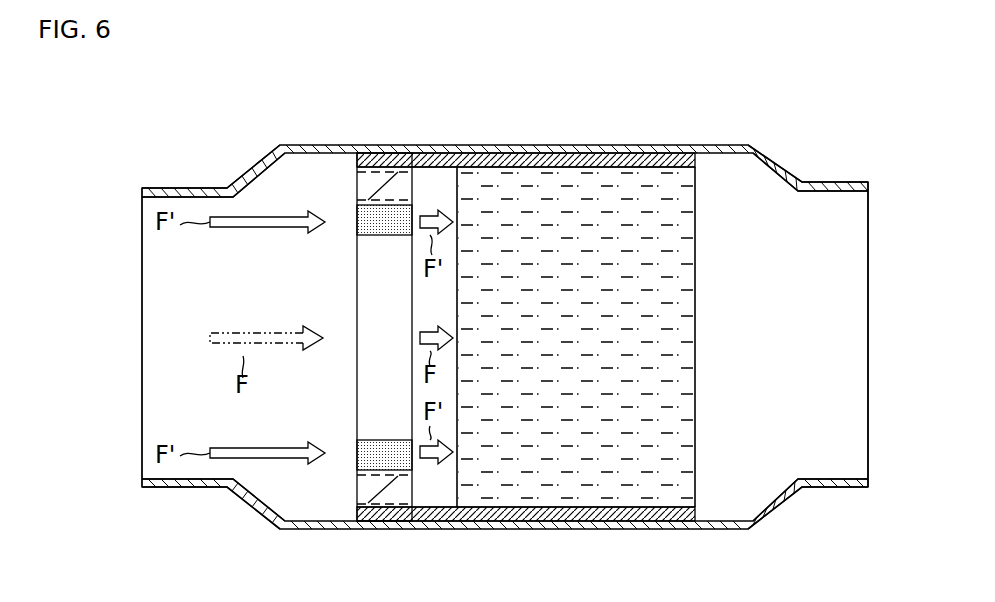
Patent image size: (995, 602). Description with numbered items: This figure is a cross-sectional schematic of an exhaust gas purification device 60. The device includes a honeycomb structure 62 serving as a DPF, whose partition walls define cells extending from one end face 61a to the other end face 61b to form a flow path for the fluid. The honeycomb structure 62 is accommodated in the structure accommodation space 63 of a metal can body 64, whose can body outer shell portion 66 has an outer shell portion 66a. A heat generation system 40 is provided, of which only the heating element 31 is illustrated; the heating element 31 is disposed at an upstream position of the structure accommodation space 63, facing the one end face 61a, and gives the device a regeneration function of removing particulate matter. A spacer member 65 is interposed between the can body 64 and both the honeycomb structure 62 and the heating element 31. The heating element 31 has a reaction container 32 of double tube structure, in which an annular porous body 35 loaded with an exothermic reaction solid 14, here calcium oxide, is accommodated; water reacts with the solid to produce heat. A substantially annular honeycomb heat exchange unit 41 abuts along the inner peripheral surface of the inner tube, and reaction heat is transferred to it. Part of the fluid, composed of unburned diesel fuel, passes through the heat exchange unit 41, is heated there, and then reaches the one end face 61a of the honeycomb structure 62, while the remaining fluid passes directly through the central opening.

The exhaust gas purification device 60 is at (505, 318).
The reaction container 32 is at (505, 334).
The can body outer shell portion 66 is at (505, 334).
The outer shell portion 66a is at (517, 143).
The spacer member 65 is at (633, 152).
The metal can body 64 is at (703, 150).
The structure accommodation space 63 is at (725, 290).
The annular porous body 35 is at (338, 337).
The exothermic reaction solid 14 is at (365, 183).
The heat exchange unit 41 is at (372, 231).
The one end face 61a is at (457, 488).
The other end face 61b is at (697, 485).
The honeycomb structure 62 is at (547, 463).
The heating element 31 is at (238, 337).
The heat generation system 40 is at (333, 270).